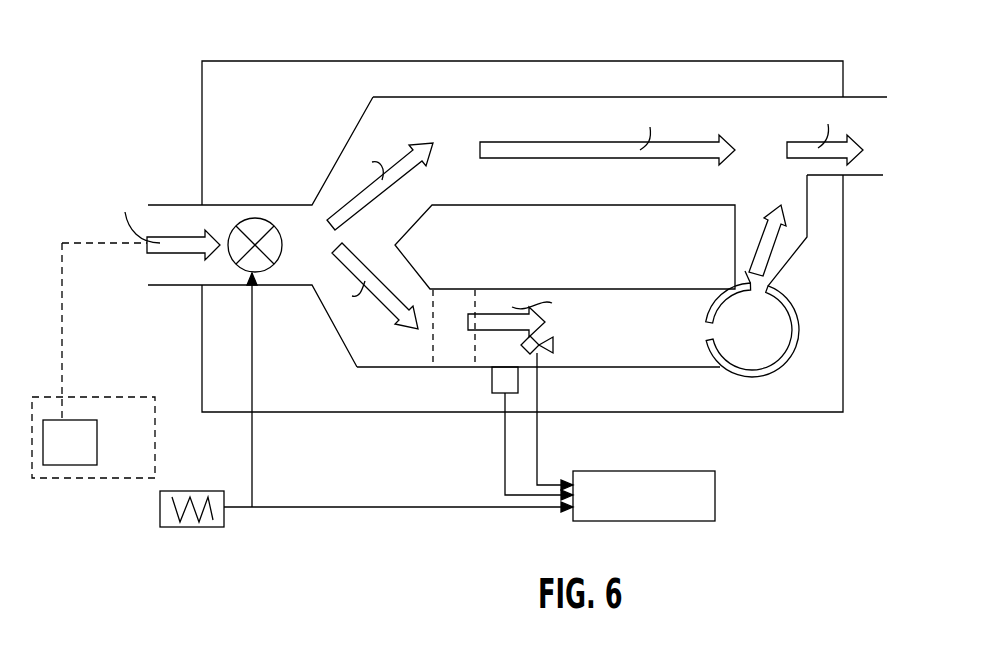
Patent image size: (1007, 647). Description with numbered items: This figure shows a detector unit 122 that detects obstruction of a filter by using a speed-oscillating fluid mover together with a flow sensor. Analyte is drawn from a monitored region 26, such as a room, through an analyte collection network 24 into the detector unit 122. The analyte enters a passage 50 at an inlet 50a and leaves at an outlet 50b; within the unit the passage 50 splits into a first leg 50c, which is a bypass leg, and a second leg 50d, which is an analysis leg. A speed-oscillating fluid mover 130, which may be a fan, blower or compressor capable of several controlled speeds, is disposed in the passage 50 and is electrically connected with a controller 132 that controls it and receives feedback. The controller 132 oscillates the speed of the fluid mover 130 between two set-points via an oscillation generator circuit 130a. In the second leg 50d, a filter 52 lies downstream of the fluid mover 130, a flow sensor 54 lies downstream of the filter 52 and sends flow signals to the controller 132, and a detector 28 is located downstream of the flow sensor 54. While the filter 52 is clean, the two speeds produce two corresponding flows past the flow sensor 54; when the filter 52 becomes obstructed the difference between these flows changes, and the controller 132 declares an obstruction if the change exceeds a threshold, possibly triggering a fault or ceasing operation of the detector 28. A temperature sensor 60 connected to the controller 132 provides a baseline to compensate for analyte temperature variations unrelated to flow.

The detector unit 122 is at (803, 420).
The passage 50 is at (232, 205).
The inlet 50a is at (138, 278).
The outlet 50b is at (888, 103).
The first leg 50c is at (440, 118).
The second leg 50d is at (403, 355).
The speed-oscillating fluid mover 130 is at (233, 262).
The oscillation generator circuit 130a is at (222, 522).
The detector 28 is at (745, 268).
The flow sensor 54 is at (545, 336).
The filter 52 is at (467, 360).
The temperature sensor 60 is at (497, 390).
The analyte collection network 24 is at (97, 432).
The region 26 is at (72, 480).
The controller 132 is at (697, 521).